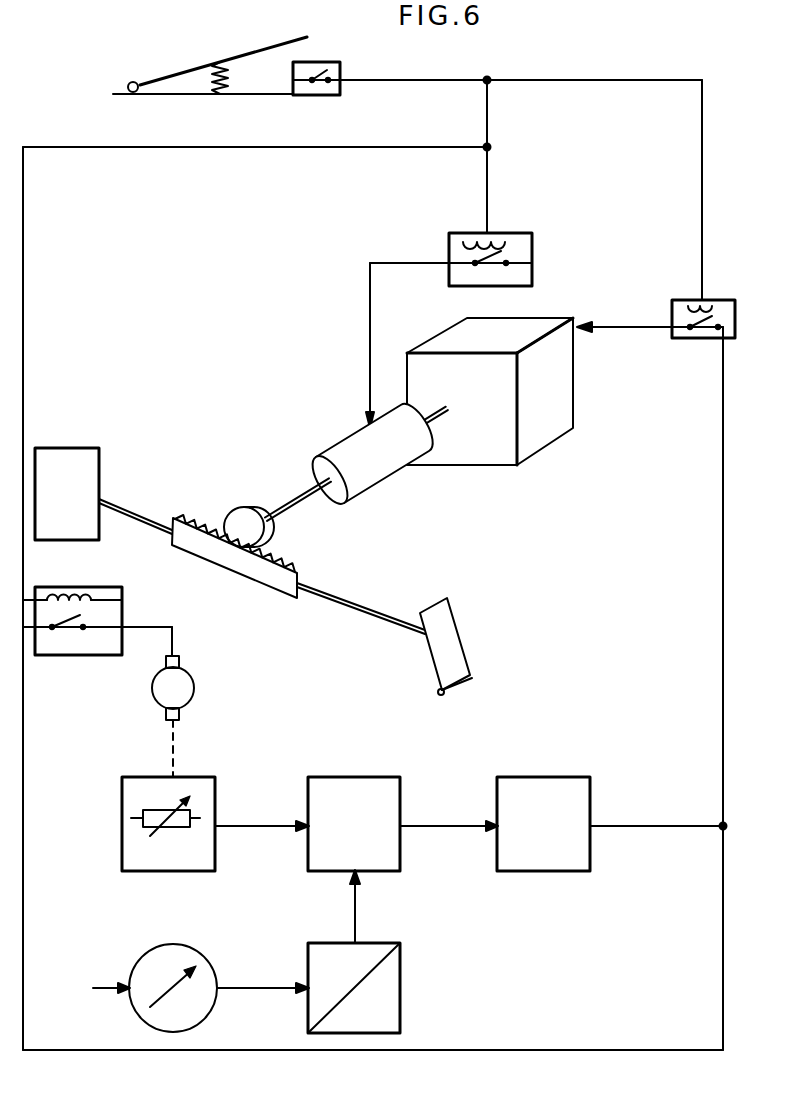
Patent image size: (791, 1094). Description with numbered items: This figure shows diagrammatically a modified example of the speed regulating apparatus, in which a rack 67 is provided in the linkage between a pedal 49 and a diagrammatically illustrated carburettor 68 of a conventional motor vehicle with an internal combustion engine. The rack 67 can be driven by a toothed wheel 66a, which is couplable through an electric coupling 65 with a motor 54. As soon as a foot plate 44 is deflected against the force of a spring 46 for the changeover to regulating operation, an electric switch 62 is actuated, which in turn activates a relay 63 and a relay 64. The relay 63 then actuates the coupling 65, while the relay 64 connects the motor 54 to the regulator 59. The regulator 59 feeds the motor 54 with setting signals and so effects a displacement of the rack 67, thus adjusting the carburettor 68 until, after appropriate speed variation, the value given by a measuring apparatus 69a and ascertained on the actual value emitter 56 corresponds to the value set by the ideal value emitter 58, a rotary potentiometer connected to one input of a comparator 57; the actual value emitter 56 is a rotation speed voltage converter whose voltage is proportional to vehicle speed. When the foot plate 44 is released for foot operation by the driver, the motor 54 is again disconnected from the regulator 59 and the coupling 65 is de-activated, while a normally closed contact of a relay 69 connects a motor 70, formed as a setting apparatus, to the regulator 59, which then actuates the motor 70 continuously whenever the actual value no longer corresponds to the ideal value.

The foot plate 44 is at (256, 53).
The spring 46 is at (236, 75).
The electric switch 62 is at (340, 95).
The relay 63 is at (535, 262).
The relay 64 is at (669, 303).
The motor 54 is at (573, 407).
The electric coupling 65 is at (350, 484).
The toothed wheel 66a is at (266, 536).
The rack 67 is at (255, 584).
The carburettor 68 is at (77, 493).
The relay 69 is at (103, 588).
The motor 70 is at (184, 678).
The rotary potentiometer 58 is at (193, 777).
The comparator 57 is at (350, 777).
The regulator 59 is at (540, 777).
The actual value emitter 56 is at (400, 953).
The measuring apparatus 69a is at (193, 946).
The pedal 49 is at (465, 636).